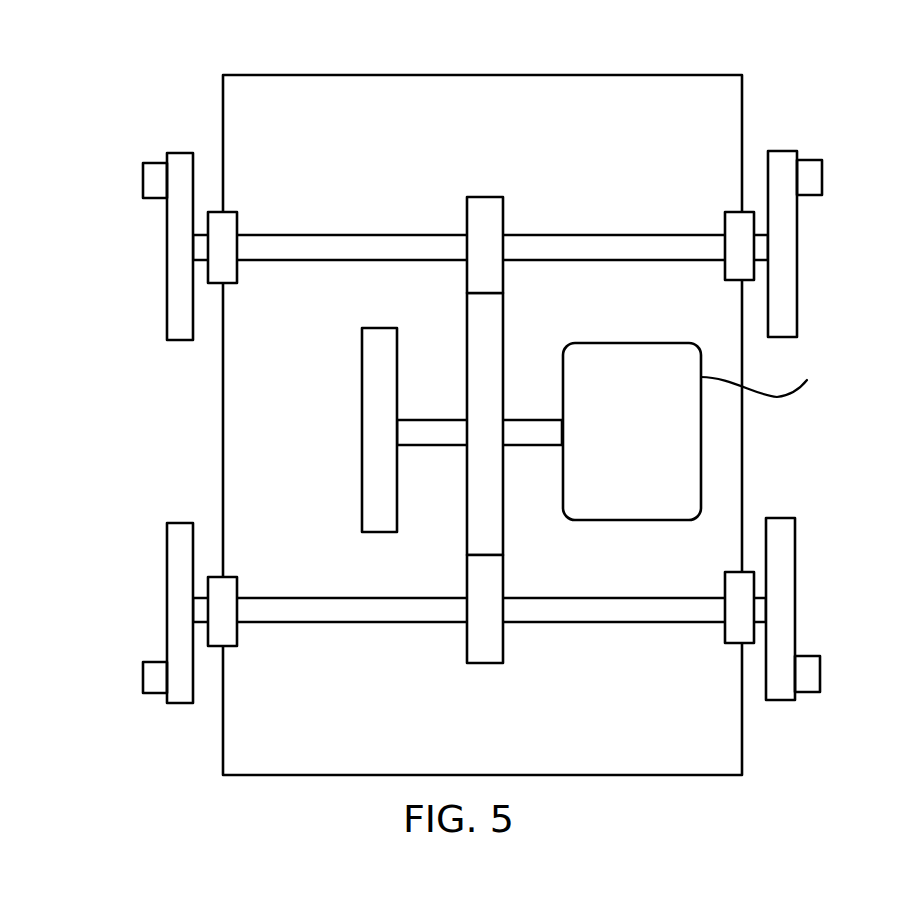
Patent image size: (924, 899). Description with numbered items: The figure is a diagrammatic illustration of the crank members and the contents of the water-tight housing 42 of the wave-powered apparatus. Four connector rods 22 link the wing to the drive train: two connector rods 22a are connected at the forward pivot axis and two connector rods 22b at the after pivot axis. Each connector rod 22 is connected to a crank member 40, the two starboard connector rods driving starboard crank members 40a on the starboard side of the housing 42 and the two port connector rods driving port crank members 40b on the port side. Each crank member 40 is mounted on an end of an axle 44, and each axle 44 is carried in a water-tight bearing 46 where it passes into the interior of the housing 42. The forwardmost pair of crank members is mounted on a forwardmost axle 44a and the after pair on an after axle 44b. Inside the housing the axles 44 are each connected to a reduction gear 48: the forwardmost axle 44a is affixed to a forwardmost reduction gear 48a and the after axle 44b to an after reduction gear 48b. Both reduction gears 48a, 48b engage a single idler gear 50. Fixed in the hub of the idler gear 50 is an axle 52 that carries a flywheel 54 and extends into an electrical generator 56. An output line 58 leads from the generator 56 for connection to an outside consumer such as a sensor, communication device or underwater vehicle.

The water-tight housing 42 is at (365, 75).
The axle 44 is at (480, 428).
The forwardmost axle 44a is at (410, 233).
The after axle 44b is at (525, 623).
The water-tight bearing 46 is at (219, 210).
The reduction gear 48 is at (487, 433).
The forwardmost reduction gear 48a is at (485, 196).
The after reduction gear 48b is at (480, 665).
The idler gear 50 is at (503, 367).
The axle 52 is at (430, 440).
The flywheel 54 is at (362, 460).
The electrical generator 56 is at (701, 455).
The output line 58 is at (774, 398).
The connector rod 22 is at (483, 426).
The connector rod 22a is at (145, 177).
The connector rod 22b is at (148, 680).
The crank member 40 is at (483, 427).
The starboard crank member 40a is at (798, 260).
The port crank member 40b is at (167, 268).